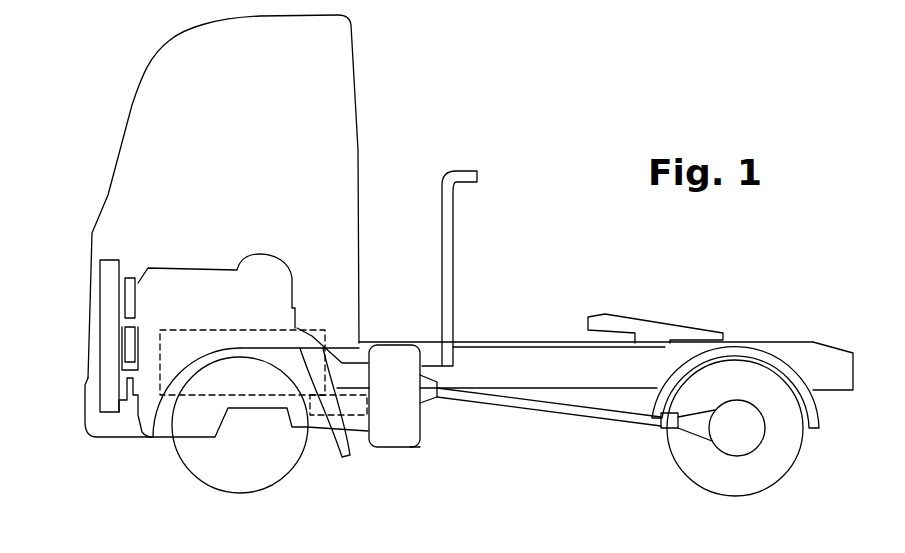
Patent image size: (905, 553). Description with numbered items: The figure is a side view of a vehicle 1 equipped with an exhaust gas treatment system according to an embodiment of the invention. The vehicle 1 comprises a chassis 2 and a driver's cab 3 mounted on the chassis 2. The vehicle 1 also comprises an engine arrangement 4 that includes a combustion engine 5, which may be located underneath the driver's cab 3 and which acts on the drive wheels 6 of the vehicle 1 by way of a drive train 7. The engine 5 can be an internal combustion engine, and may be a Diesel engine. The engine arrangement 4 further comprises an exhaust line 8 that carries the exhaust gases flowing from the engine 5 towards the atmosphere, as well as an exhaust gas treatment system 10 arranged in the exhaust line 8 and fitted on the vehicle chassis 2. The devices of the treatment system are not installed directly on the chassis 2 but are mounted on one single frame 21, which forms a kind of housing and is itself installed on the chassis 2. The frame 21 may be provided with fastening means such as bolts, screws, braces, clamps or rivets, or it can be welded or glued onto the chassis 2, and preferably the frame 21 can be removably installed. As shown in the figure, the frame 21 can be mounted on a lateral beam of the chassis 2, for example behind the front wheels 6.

The vehicle 1 is at (430, 135).
The chassis 2 is at (527, 342).
The driver's cab 3 is at (132, 106).
The engine arrangement 4 is at (447, 433).
The combustion engine 5 is at (175, 351).
The drive wheels 6 is at (227, 472).
The drive train 7 is at (573, 408).
The exhaust line 8 is at (447, 218).
The exhaust gas treatment system 10 is at (423, 455).
The frame 21 is at (392, 427).